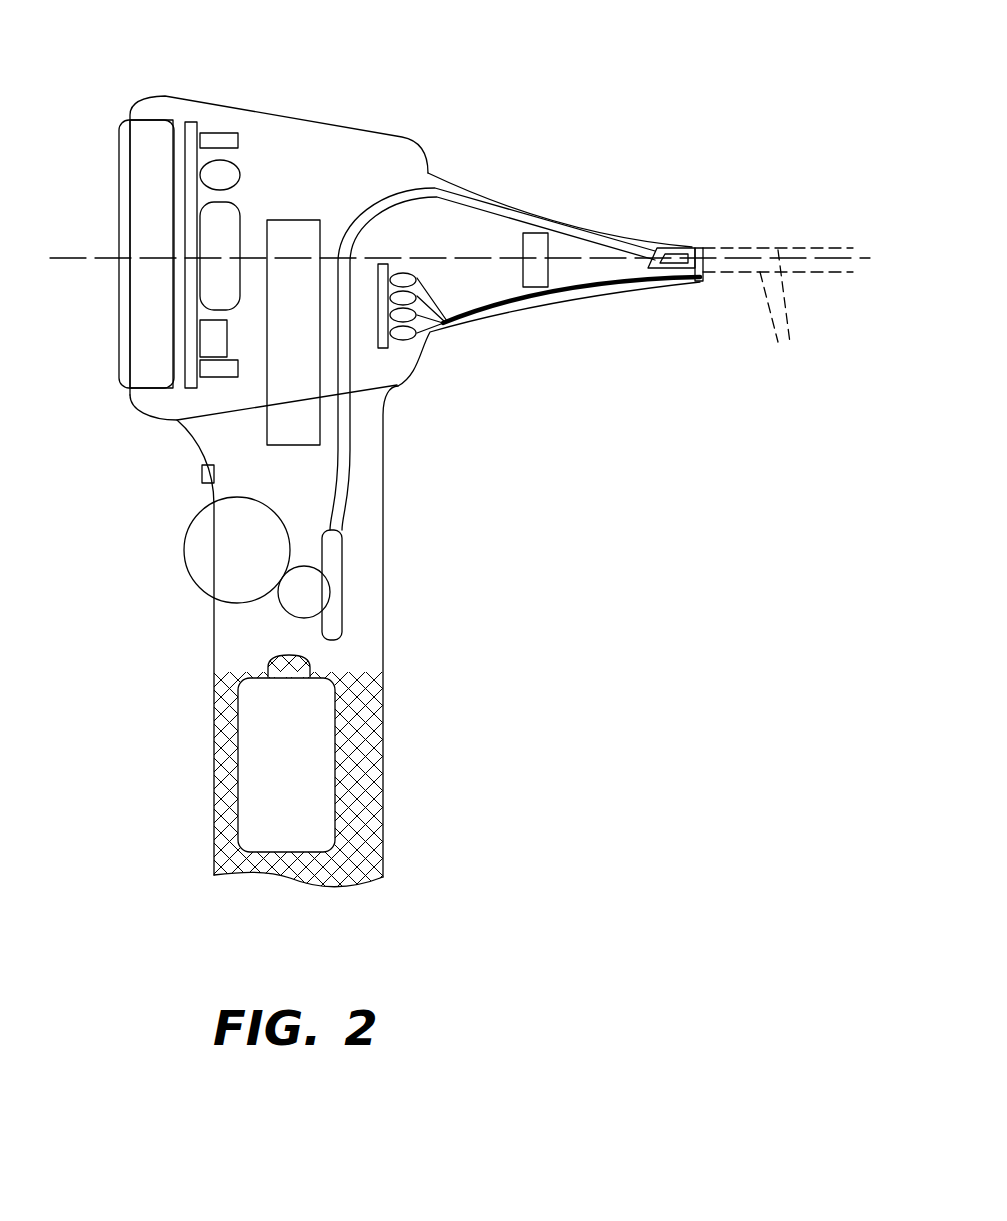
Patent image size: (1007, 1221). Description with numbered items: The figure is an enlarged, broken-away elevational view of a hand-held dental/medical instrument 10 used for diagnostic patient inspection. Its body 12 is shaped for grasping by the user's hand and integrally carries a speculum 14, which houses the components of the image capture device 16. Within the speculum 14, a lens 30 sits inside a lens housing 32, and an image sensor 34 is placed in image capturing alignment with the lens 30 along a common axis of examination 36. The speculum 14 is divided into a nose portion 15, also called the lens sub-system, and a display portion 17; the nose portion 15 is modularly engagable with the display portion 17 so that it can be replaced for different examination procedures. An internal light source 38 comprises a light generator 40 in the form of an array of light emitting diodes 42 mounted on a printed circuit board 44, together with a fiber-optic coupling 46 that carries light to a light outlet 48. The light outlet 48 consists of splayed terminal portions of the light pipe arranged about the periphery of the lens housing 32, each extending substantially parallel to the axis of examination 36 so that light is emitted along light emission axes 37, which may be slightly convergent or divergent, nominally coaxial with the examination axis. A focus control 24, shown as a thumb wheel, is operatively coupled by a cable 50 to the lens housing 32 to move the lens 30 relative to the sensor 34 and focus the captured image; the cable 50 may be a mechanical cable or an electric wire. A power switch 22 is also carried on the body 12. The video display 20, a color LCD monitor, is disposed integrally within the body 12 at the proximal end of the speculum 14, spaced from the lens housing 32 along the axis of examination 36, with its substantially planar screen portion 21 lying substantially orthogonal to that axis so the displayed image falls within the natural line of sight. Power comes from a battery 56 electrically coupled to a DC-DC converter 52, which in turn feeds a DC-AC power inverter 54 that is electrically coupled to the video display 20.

The dental/medical instrument 10 is at (97, 58).
The body 12 is at (213, 640).
The speculum 14 is at (490, 130).
The nose portion 15 is at (555, 302).
The image capture device 16 is at (549, 345).
The display portion 17 is at (355, 127).
The video display 20 is at (143, 198).
The screen portion 21 is at (118, 292).
The power switch 22 is at (202, 477).
The focus control 24 is at (197, 555).
The lens 30 is at (703, 258).
The lens housing 32 is at (682, 247).
The image sensor 34 is at (537, 240).
The axis of examination 36 is at (820, 260).
The light emission axes 37 is at (782, 313).
The internal light source 38 is at (440, 363).
The light generator 40 is at (407, 333).
The light emitting diodes 42 is at (403, 280).
The printed circuit board 44 is at (385, 345).
The fiber-optic coupling 46 is at (598, 288).
The light outlet 48 is at (697, 247).
The cable 50 is at (358, 207).
The DC-DC converter 52 is at (295, 220).
The DC-AC power inverter 54 is at (192, 125).
The battery 56 is at (245, 785).